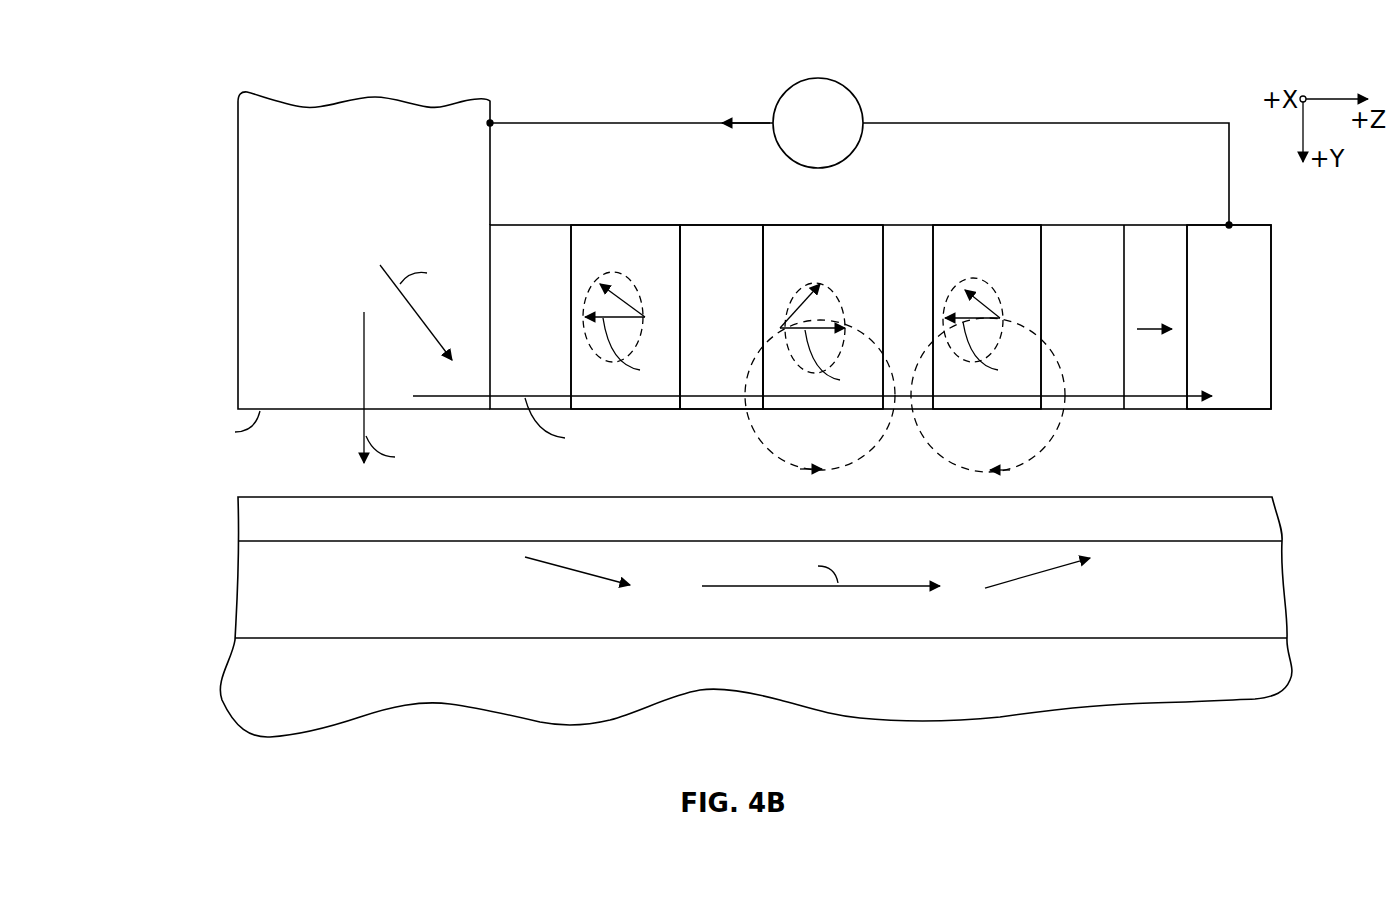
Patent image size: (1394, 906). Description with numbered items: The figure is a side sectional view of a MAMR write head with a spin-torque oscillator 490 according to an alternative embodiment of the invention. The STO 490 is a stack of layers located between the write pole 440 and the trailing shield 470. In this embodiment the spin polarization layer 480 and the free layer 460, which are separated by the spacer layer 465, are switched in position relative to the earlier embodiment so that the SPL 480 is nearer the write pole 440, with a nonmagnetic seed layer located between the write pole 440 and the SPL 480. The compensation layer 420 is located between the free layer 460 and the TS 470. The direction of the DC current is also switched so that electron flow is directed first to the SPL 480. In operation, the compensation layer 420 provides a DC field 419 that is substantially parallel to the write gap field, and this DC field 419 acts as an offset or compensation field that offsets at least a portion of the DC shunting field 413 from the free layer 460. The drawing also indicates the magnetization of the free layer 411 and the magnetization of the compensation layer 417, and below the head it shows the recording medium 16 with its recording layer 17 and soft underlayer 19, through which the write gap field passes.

The write pole 440 is at (255, 186).
The spin-torque oscillator 490 is at (570, 77).
The spin polarization layer 480 is at (630, 225).
The spacer layer 465 is at (722, 225).
The free layer 460 is at (852, 225).
The compensation layer 420 is at (985, 225).
The trailing shield 470 is at (1253, 225).
The free layer magnetization 411 is at (806, 373).
The DC shunting field 413 is at (780, 455).
The compensation layer magnetization 417 is at (972, 374).
The DC field 419 is at (1030, 455).
The magnetic recording medium 16 is at (212, 746).
The recording layer 17 is at (1253, 522).
The soft underlayer 19 is at (1250, 594).